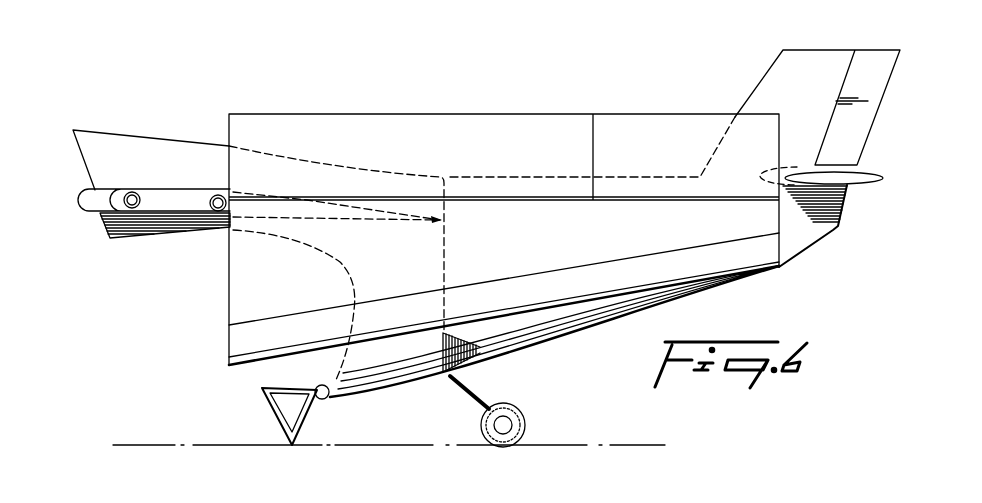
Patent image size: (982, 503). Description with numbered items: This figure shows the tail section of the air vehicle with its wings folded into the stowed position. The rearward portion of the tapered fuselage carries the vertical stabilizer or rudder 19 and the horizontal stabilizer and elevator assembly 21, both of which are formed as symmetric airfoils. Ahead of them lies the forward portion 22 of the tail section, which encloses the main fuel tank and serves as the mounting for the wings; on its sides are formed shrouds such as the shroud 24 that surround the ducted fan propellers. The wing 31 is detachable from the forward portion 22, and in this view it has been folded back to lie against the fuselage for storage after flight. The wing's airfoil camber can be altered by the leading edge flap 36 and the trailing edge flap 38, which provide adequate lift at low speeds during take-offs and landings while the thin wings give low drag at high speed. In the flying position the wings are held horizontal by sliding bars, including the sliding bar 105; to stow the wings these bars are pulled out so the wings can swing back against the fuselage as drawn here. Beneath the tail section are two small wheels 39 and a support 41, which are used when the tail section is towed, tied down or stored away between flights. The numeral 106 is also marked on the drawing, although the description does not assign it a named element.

The vertical stabilizer or rudder 19 is at (775, 73).
The horizontal stabilizer and elevator assembly 21 is at (848, 182).
The forward portion of tail section 22 is at (128, 138).
The shroud 24 is at (456, 372).
The wing 31 is at (708, 228).
The leading edge flap 36 is at (92, 201).
The trailing edge flap 38 is at (425, 123).
The small wheel 39 is at (503, 447).
The support 41 is at (268, 400).
The sliding bar 105 is at (126, 207).
The pivot pin 106 is at (216, 210).